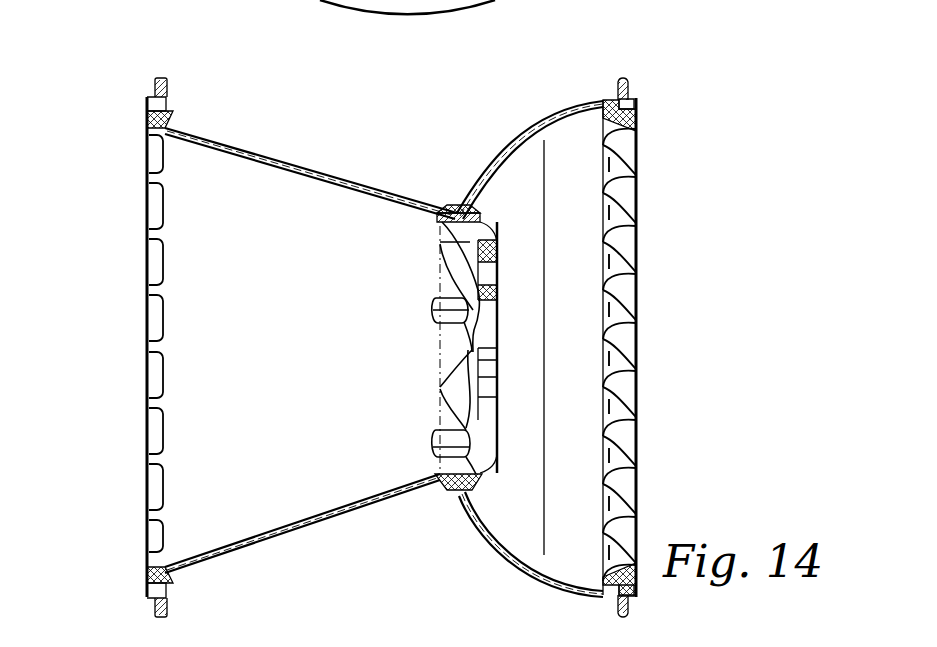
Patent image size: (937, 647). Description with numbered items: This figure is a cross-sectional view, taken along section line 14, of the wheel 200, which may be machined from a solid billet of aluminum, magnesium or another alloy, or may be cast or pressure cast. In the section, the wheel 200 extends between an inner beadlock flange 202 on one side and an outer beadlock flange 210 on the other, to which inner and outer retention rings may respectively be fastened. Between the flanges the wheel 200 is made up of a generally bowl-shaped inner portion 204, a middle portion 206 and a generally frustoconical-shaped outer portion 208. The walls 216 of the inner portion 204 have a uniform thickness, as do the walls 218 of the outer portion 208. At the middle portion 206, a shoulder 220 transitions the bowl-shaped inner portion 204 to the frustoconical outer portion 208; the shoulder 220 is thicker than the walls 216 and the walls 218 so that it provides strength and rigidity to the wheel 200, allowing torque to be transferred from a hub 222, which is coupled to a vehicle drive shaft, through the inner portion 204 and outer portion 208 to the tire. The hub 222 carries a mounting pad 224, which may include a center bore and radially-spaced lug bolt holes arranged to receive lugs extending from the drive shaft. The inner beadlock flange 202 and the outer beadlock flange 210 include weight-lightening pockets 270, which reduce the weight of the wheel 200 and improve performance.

The section line 14 is at (415, 0).
The wheel 200 is at (752, 121).
The inner beadlock flange 202 is at (624, 78).
The inner portion 204 is at (520, 141).
The middle portion 206 is at (456, 213).
The outer portion 208 is at (300, 166).
The outer beadlock flange 210 is at (162, 78).
The walls of the inner portion 216 is at (502, 160).
The walls of the outer portion 218 is at (322, 187).
The shoulder 220 is at (453, 490).
The hub 222 is at (352, 333).
The mounting pad 224 is at (538, 322).
The weight-lightening pockets 270 is at (147, 205).